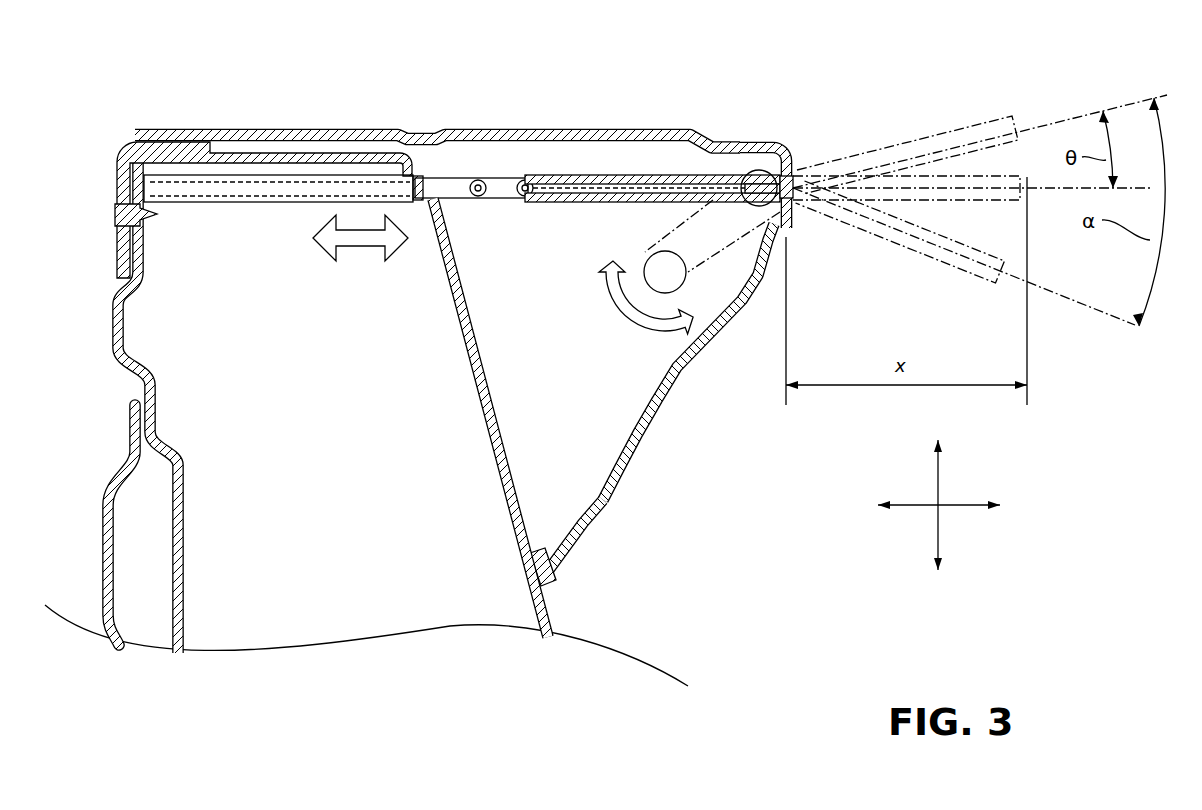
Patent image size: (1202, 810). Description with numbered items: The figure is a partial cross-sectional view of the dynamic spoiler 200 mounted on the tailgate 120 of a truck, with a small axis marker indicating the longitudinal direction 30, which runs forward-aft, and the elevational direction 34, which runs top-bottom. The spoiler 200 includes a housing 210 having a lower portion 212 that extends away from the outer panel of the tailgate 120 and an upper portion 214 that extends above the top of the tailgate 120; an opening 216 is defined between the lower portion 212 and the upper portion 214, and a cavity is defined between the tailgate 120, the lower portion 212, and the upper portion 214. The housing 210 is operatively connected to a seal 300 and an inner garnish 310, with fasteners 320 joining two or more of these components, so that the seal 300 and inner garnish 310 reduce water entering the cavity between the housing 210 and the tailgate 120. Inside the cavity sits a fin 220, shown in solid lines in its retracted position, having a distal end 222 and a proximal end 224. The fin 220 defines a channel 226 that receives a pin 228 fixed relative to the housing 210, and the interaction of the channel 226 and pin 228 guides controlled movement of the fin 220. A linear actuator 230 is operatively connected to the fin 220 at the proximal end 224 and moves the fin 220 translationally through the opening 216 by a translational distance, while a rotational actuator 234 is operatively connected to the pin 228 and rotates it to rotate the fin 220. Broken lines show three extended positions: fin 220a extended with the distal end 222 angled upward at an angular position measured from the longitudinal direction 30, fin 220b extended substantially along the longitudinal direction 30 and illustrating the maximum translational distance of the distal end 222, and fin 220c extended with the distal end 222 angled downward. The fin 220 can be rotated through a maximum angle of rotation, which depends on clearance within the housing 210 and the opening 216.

The longitudinal direction 30 is at (976, 507).
The elevational direction 34 is at (938, 540).
The tailgate 120 is at (522, 545).
The dynamic spoiler 200 is at (712, 439).
The housing 210 is at (650, 417).
The lower portion 212 is at (622, 455).
The upper portion 214 is at (248, 128).
The opening 216 is at (808, 163).
The fin 220 is at (583, 176).
The fin in upward-angled extended position 220a is at (988, 120).
The fin in longitudinal extended position 220b is at (978, 205).
The fin in downward-angled extended position 220c is at (977, 282).
The distal end 222 is at (781, 163).
The proximal end 224 is at (529, 176).
The channel 226 is at (656, 178).
The pin 228 is at (757, 170).
The linear actuator 230 is at (180, 172).
The rotational actuator 234 is at (667, 273).
The seal 300 is at (543, 587).
The inner garnish 310 is at (117, 160).
The fastener 320 is at (117, 213).